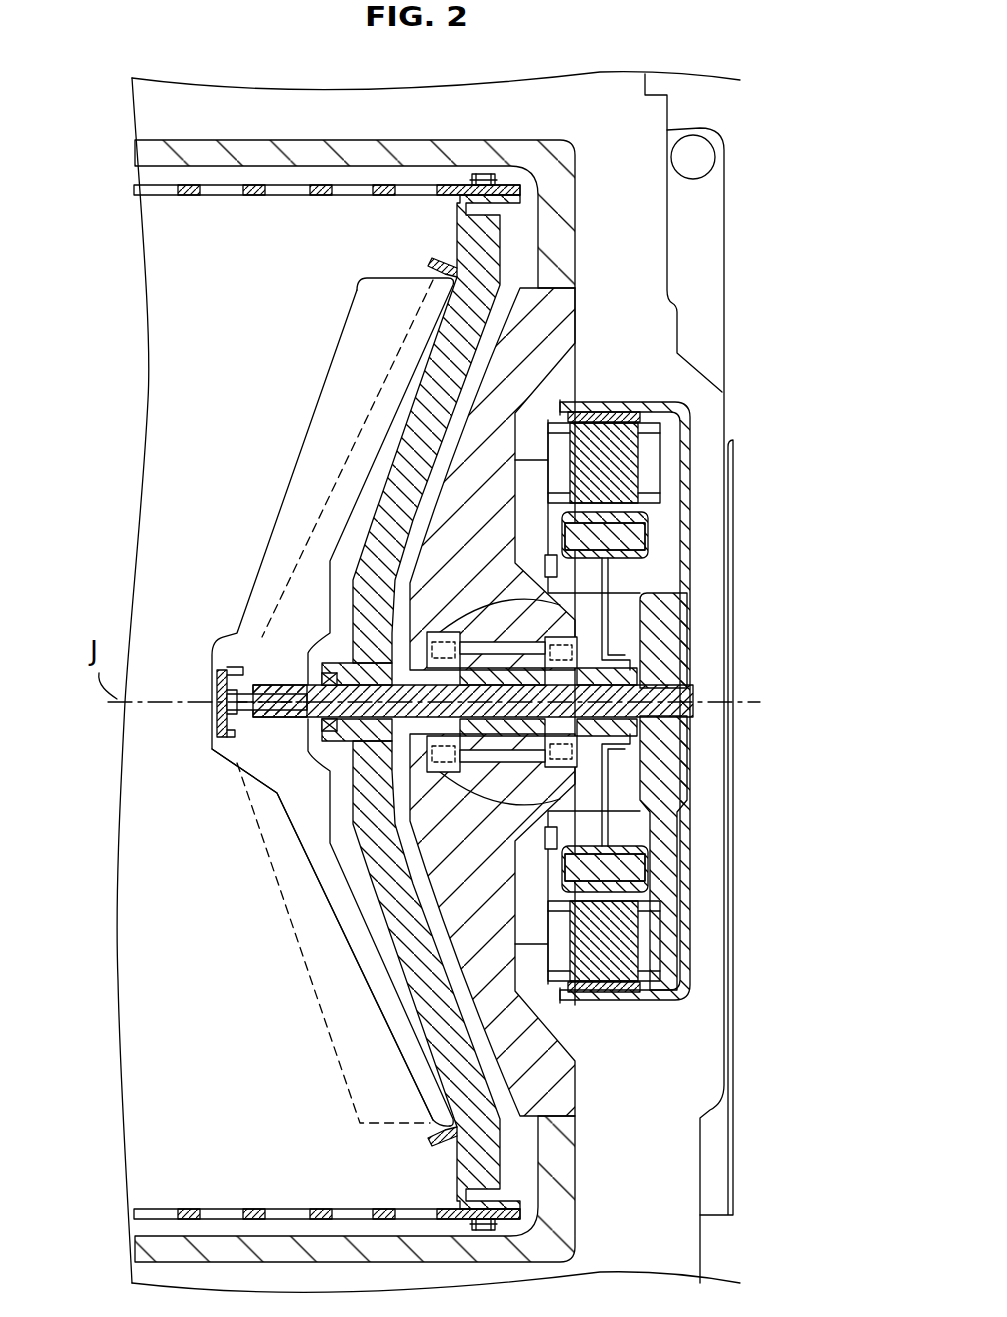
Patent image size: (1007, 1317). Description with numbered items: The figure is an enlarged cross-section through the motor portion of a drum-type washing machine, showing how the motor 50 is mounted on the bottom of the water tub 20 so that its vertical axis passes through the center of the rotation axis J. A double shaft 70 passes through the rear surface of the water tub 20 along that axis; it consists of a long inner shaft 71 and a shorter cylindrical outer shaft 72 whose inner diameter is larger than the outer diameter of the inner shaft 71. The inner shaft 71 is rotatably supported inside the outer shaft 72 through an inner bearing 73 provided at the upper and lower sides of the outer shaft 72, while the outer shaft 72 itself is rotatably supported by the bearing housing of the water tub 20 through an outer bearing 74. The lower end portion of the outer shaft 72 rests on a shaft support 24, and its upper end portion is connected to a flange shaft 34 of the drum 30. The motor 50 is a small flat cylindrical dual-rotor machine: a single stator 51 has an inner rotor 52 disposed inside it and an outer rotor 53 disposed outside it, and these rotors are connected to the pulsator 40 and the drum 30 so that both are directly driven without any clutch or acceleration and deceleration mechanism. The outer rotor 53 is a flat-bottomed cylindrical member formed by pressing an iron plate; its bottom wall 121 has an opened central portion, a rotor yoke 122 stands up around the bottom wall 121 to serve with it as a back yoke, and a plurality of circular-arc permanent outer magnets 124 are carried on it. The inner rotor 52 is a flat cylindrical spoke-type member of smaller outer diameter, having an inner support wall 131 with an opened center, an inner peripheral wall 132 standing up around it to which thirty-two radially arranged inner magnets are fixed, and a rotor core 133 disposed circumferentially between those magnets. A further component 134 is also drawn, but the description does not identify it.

The water tub 20 is at (307, 150).
The drum 30 is at (190, 195).
The flange shaft 34 is at (495, 262).
The pulsator 40 is at (346, 400).
The motor 50 is at (655, 390).
The stator 51 is at (625, 447).
The inner rotor 52 is at (612, 573).
The outer rotor 53 is at (667, 618).
The double shaft 70 is at (247, 774).
The inner shaft 71 is at (300, 773).
The outer shaft 72 is at (347, 797).
The inner bearing 73 is at (330, 637).
The outer bearing 74 is at (572, 630).
The shaft support 24 is at (420, 852).
The bottom wall 121 is at (697, 913).
The rotor yoke 122 is at (663, 1000).
The outer magnets 124 is at (598, 998).
The inner support wall 131 is at (612, 790).
The inner peripheral wall 132 is at (630, 838).
The rotor core 133 is at (637, 867).
The upper core 134 is at (650, 530).